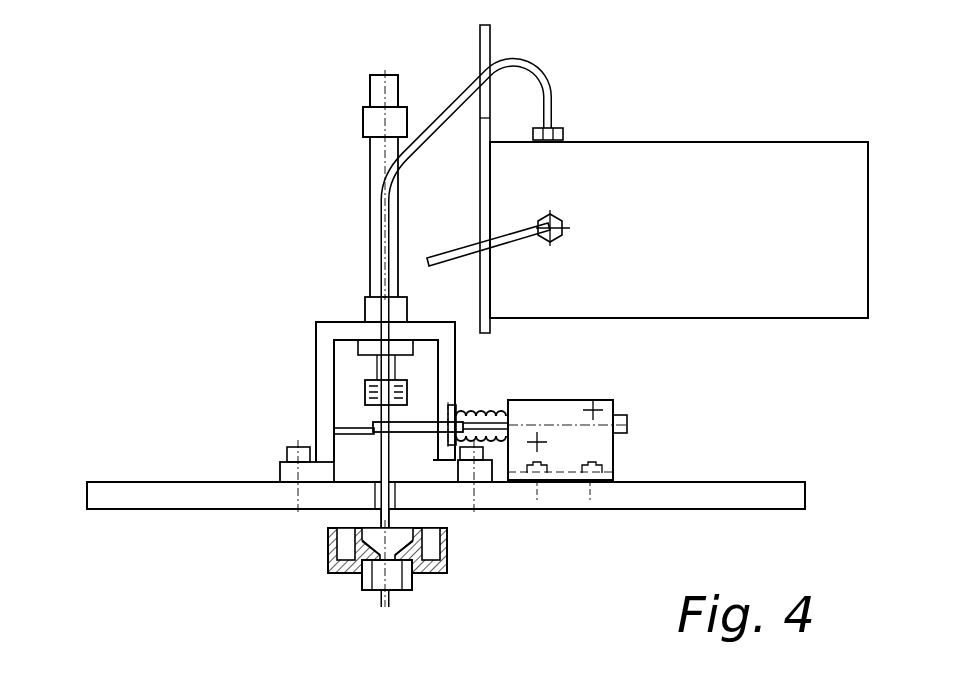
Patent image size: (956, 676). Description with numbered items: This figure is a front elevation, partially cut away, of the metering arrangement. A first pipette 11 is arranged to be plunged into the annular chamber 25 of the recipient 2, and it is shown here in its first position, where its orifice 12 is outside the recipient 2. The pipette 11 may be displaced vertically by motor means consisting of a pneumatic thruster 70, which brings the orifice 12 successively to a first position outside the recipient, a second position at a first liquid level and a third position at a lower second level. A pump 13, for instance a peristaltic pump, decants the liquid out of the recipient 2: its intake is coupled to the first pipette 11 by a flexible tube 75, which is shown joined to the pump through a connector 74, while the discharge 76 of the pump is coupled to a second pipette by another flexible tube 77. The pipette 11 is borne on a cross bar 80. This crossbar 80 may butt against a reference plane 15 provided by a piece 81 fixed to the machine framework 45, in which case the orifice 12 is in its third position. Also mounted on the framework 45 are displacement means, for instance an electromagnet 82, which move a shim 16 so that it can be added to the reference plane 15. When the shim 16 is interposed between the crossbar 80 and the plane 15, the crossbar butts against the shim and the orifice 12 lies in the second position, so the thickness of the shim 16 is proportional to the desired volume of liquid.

The recipient 2 is at (445, 585).
The first pipette 11 is at (380, 492).
The orifice 12 is at (380, 520).
The pump 13 is at (765, 290).
The reference plane 15 is at (336, 440).
The shim 16 is at (413, 424).
The annular chamber 25 is at (431, 529).
The machine framework 45 is at (123, 493).
The pneumatic thruster 70 is at (380, 157).
The tube connector 74 is at (565, 135).
The flexible tube 75 is at (445, 107).
The discharge 76 is at (562, 220).
The flexible tube 77 is at (453, 252).
The cross bar 80 is at (407, 388).
The piece 81 is at (280, 475).
The electromagnet 82 is at (568, 402).